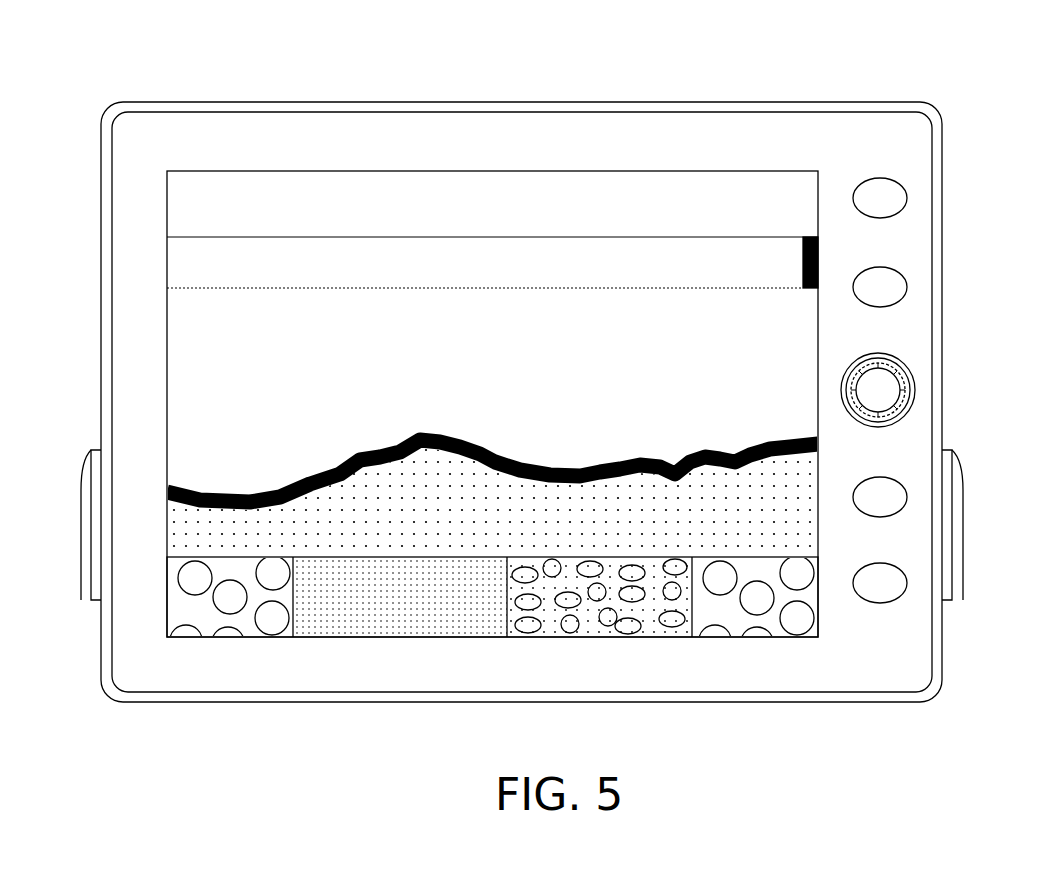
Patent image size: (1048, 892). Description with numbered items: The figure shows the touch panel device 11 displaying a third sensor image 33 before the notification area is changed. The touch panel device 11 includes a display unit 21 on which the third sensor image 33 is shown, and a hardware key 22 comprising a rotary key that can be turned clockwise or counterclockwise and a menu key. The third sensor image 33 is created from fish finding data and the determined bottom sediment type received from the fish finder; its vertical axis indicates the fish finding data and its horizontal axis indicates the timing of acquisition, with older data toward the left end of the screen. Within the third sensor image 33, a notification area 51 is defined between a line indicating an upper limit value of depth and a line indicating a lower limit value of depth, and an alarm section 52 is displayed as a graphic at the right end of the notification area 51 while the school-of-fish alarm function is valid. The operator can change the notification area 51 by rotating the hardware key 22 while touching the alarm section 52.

The touch panel device 11 is at (1012, 130).
The display unit 21 is at (832, 163).
The hardware key 22 is at (920, 362).
The third sensor image 33 is at (165, 202).
The notification area 51 is at (485, 288).
The alarm section 52 is at (808, 290).